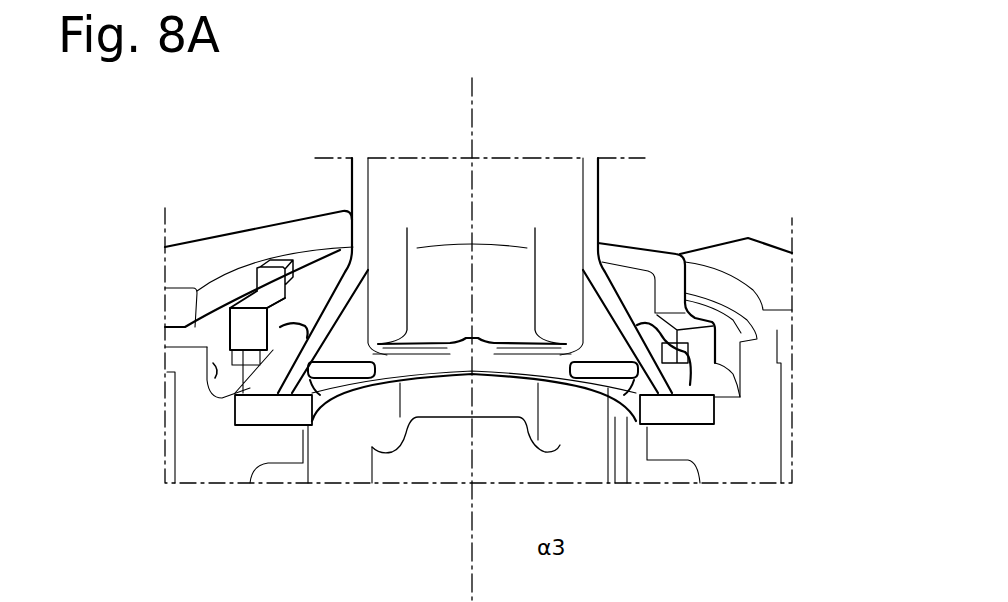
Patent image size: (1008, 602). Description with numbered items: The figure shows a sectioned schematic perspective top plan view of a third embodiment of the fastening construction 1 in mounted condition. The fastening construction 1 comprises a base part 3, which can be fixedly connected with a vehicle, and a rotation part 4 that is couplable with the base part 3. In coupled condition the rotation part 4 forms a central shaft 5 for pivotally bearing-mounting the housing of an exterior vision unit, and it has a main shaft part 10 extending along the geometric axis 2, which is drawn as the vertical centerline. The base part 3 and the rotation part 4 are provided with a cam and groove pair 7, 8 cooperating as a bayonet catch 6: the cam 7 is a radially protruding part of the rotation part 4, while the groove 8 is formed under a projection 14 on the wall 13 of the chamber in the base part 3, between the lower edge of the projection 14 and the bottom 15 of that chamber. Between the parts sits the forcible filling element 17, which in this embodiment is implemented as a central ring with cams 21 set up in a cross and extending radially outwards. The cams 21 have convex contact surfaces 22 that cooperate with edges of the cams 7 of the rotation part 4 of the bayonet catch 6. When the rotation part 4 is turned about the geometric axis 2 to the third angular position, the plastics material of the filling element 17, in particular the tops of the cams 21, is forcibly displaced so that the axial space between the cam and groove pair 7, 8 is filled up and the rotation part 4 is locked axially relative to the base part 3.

The fastening construction 1 is at (152, 397).
The geometric axis 2 is at (472, 100).
The base part 3 is at (777, 327).
The rotation part 4 is at (616, 278).
The central shaft 5 is at (505, 254).
The bayonet catch 6 is at (238, 390).
The cam 7 is at (312, 283).
The groove 8 is at (222, 364).
The main shaft part 10 is at (590, 200).
The wall 13 is at (212, 381).
The projection 14 is at (182, 241).
The bottom 15 is at (407, 357).
The forcible filling element 17 is at (587, 401).
The cams 21 is at (720, 472).
The contact surfaces 22 is at (680, 400).